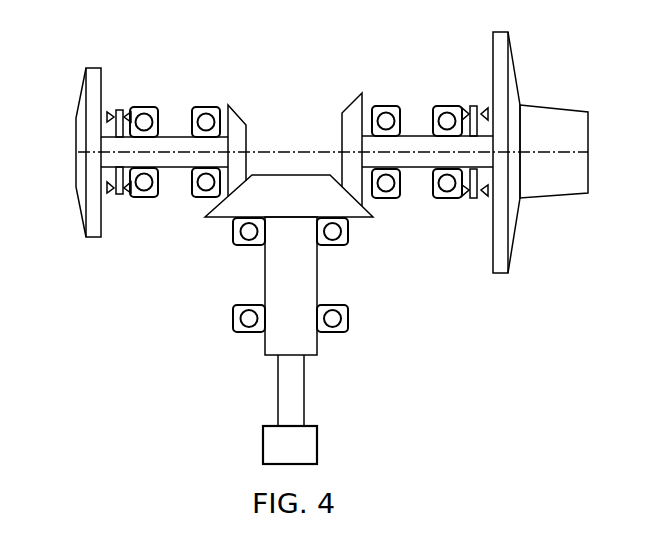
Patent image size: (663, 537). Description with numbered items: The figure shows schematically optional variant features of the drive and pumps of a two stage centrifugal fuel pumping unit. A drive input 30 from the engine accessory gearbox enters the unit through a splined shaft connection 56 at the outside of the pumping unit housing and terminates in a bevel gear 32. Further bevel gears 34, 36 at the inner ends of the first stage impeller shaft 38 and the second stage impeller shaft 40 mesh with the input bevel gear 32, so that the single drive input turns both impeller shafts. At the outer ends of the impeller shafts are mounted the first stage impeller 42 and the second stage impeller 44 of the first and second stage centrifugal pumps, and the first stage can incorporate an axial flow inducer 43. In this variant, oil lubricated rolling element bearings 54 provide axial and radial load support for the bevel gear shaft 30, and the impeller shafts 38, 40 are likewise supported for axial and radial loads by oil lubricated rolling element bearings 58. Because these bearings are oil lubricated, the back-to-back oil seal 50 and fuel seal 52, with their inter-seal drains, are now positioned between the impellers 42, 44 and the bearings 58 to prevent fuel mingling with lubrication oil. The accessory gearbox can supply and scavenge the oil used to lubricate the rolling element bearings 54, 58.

The drive input 30 is at (293, 335).
The bevel gear 32 is at (290, 196).
The bevel gear 34 is at (354, 113).
The bevel gear 36 is at (238, 118).
The first stage impeller shaft 38 is at (405, 146).
The second stage impeller shaft 40 is at (182, 147).
The first stage impeller 42 is at (503, 65).
The axial flow inducer 43 is at (547, 125).
The second stage impeller 44 is at (92, 99).
The oil seal 50 is at (128, 198).
The fuel seal 52 is at (108, 196).
The rolling element bearings 54 is at (336, 234).
The splined shaft connection 56 is at (320, 444).
The rolling element bearings 58 is at (446, 186).